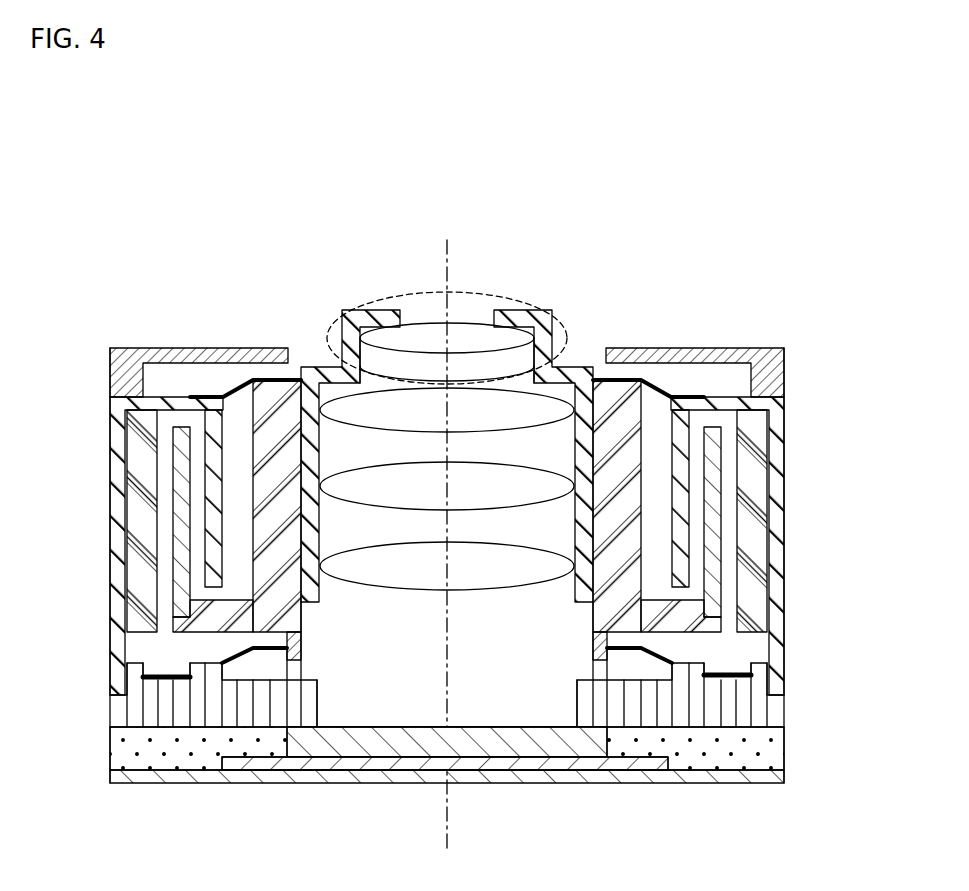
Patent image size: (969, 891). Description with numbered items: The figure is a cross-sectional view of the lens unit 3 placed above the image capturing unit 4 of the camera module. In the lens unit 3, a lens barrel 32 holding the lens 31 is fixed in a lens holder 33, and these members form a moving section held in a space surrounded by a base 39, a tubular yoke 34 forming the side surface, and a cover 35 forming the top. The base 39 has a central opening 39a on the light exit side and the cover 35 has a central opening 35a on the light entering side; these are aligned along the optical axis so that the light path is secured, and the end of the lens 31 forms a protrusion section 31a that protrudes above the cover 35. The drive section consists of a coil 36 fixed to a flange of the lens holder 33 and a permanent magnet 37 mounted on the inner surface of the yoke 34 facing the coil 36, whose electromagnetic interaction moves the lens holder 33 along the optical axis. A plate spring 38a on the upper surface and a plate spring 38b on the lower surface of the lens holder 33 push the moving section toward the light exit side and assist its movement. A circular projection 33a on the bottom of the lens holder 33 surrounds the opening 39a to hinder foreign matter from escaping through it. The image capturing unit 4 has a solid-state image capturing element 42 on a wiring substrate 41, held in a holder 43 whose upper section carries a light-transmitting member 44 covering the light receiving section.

The lens unit 3 is at (97, 348).
The image capturing unit 4 is at (97, 730).
The lens 31 is at (418, 423).
The protrusion section 31a is at (483, 292).
The lens barrel 32 is at (573, 597).
The lens holder 33 is at (598, 393).
The projection 33a is at (296, 663).
The yoke 34 is at (772, 404).
The cover 35 is at (784, 353).
The opening 35a is at (318, 352).
The coil 36 is at (710, 490).
The permanent magnet 37 is at (746, 520).
The plate spring 38a is at (234, 395).
The plate spring 38b is at (637, 648).
The base 39 is at (784, 705).
The opening 39a is at (405, 712).
The wiring substrate 41 is at (784, 777).
The solid-state image capturing element 42 is at (565, 771).
The holder 43 is at (784, 745).
The light-transmitting member 44 is at (516, 740).